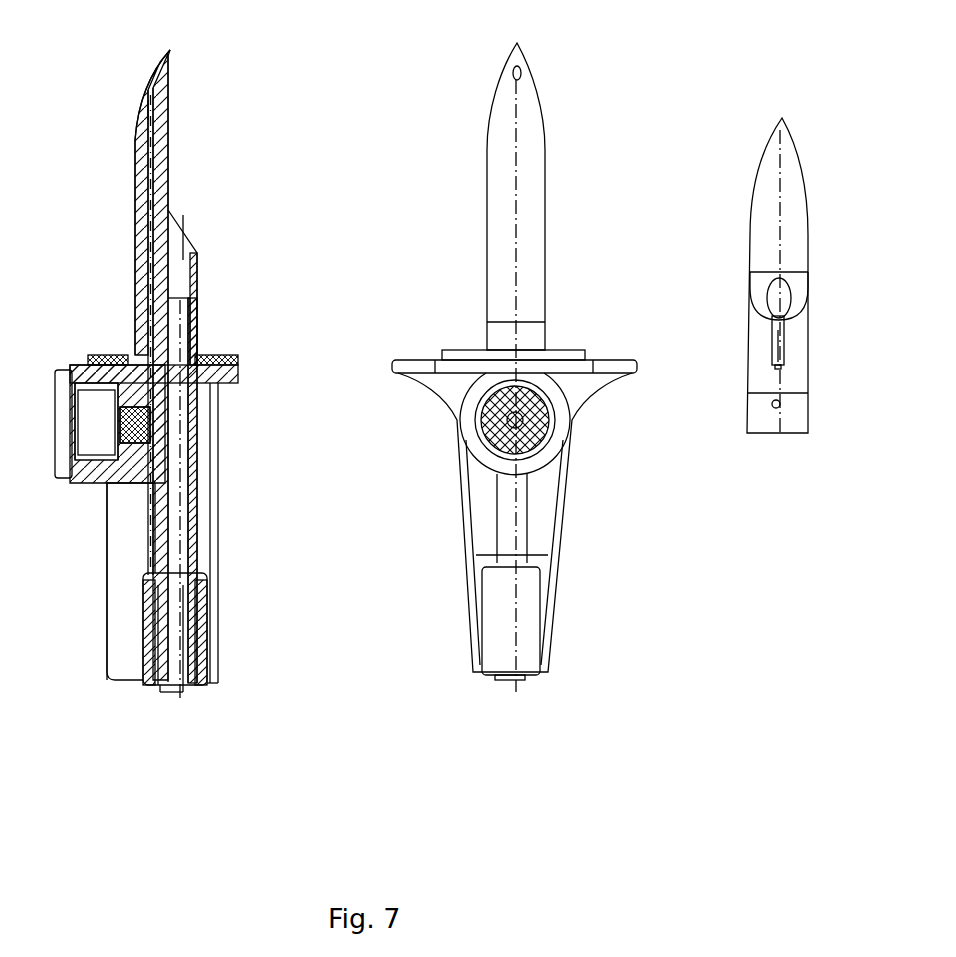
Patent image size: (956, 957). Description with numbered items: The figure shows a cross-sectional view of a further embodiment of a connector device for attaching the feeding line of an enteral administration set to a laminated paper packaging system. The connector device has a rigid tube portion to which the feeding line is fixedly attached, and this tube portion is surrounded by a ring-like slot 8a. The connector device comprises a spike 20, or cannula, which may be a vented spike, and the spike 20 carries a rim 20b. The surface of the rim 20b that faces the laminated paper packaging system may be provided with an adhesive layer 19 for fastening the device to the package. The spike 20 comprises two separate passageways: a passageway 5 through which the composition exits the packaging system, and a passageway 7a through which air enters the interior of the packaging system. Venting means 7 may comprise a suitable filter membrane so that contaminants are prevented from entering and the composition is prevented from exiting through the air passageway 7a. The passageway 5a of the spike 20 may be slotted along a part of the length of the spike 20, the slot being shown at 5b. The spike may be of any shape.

The passageway 5 is at (108, 690).
The passageway of spike 5a is at (180, 690).
The slot 5b is at (783, 357).
The venting means 7 is at (48, 437).
The air passageway 7a is at (525, 62).
The ring-like slot 8a is at (153, 673).
The adhesive layer 19 is at (242, 358).
The spike 20 is at (153, 88).
The rim 20b is at (245, 378).